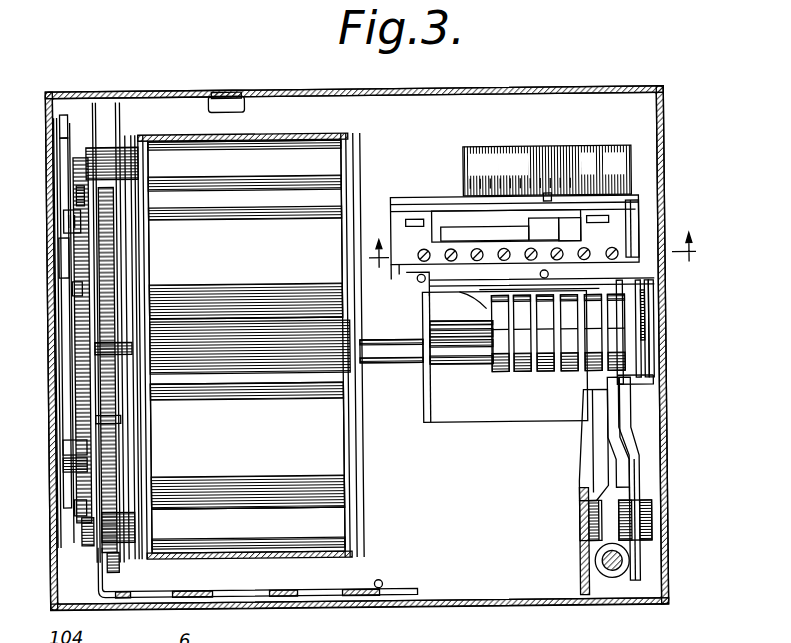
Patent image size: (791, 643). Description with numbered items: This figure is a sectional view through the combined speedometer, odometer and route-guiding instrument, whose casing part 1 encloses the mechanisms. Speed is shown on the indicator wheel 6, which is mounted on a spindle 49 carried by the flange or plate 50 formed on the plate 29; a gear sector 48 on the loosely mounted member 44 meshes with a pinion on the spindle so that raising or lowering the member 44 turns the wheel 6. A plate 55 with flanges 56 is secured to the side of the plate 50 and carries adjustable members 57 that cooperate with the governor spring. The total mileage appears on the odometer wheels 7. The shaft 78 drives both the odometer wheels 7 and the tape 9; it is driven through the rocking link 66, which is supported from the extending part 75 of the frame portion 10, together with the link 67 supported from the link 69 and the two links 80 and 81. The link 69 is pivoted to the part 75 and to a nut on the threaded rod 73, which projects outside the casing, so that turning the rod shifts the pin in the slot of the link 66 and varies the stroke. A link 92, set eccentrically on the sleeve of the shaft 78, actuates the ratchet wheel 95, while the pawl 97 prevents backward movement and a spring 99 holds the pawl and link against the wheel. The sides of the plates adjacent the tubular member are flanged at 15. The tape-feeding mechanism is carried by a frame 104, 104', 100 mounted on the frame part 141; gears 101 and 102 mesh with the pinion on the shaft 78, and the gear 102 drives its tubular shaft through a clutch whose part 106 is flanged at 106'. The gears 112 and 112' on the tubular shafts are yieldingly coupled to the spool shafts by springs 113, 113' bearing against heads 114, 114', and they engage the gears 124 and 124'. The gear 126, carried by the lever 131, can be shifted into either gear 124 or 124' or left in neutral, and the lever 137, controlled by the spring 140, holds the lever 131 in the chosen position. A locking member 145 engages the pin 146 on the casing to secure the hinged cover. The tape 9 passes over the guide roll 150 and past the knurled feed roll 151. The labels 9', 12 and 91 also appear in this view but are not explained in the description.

The casing part 1 is at (646, 466).
The indicator wheel 6 is at (637, 167).
The odometer wheels 7 is at (563, 372).
The tape 9 is at (247, 310).
The drum frame bottom 9' is at (249, 567).
The frame portion 10 is at (424, 388).
The section line 12 is at (548, 263).
The flanges 15 is at (490, 402).
The plate 29 is at (632, 276).
The member 44 is at (500, 233).
The gear sector 48 is at (565, 218).
The spindle 49 is at (548, 196).
The flange or plate 50 is at (433, 212).
The plate 55 is at (620, 228).
The flanges 56 is at (585, 218).
The adjustable members 57 is at (597, 232).
The link 66 is at (593, 519).
The link 67 is at (623, 522).
The link 69 is at (633, 495).
The threaded rod 73 is at (613, 580).
The extending part 75 is at (582, 571).
The shaft 78 is at (384, 347).
The link 80 is at (626, 426).
The link 81 is at (634, 455).
The bracket hatch 91 is at (648, 335).
The link 92 is at (648, 378).
The ratchet wheel 95 is at (647, 321).
The pawl 97 is at (648, 298).
The spring 99 is at (647, 350).
The frame 100 is at (133, 433).
The gear 101 is at (120, 262).
The gear 102 is at (113, 455).
The frame 104 is at (68, 418).
The frame 104' is at (71, 352).
The clutch part 106 is at (150, 516).
The flange 106' is at (141, 217).
The gear 112 is at (58, 532).
The gear 112' is at (46, 189).
The spring 113 is at (53, 508).
The spring 113' is at (46, 281).
The head 114 is at (51, 461).
The head 114' is at (39, 258).
The gear 124 is at (51, 442).
The gear 124' is at (45, 222).
The gear 126 is at (77, 385).
The lever 131 is at (68, 340).
The lever 137 is at (65, 140).
The spring 140 is at (62, 130).
The frame part 141 is at (174, 589).
The locking member 145 is at (246, 97).
The pin 146 is at (218, 94).
The guide roll 150 is at (283, 537).
The feed roll 151 is at (262, 288).